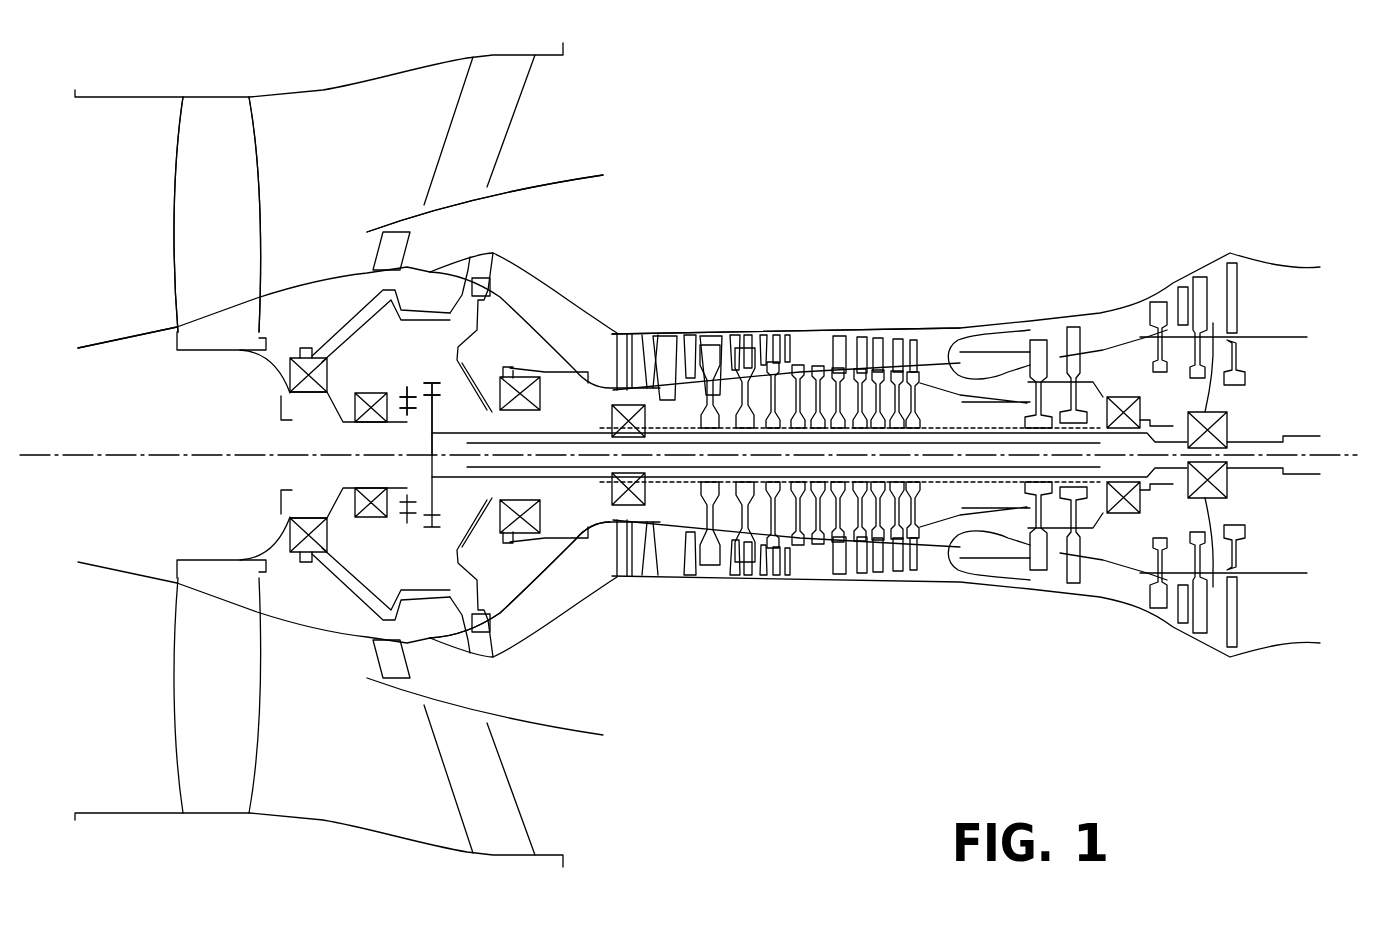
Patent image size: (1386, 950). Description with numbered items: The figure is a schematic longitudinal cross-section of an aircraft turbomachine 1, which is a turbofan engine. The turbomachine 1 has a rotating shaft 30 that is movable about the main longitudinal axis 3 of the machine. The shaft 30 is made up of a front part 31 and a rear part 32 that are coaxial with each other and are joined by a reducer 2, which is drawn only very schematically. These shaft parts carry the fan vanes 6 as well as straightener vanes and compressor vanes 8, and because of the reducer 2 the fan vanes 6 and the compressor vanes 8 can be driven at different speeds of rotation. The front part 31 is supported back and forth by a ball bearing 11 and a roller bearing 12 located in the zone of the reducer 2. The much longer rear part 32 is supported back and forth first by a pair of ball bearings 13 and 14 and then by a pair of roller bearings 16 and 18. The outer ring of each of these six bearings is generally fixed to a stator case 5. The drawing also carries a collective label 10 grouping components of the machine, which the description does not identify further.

The turbomachine 1 is at (997, 295).
The reducer 2 is at (432, 430).
The main longitudinal axis 3 is at (1337, 457).
The stator case 5 is at (592, 208).
The fan vanes 6 is at (173, 127).
The compressor vanes 8 is at (670, 347).
The core engine 10 is at (1062, 53).
The ball bearing 11 is at (310, 360).
The roller bearing 12 is at (373, 415).
The ball bearing 13 is at (528, 385).
The ball bearing 14 is at (637, 420).
The roller bearing 16 is at (1120, 400).
The roller bearing 18 is at (1207, 413).
The rotating shaft 30 is at (1312, 447).
The front part 31 is at (269, 422).
The rear part 32 is at (589, 533).